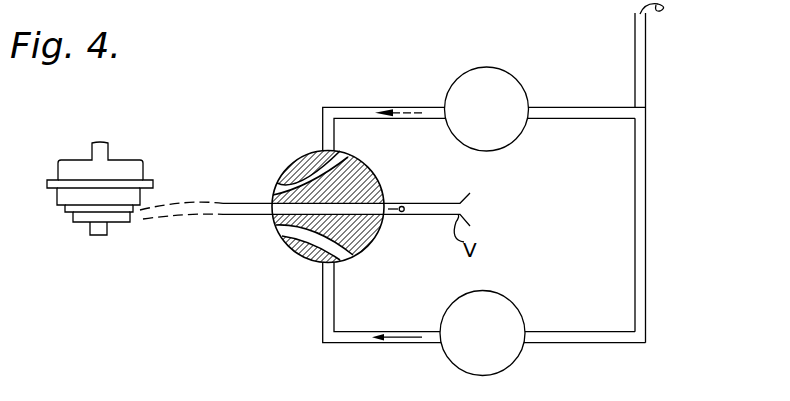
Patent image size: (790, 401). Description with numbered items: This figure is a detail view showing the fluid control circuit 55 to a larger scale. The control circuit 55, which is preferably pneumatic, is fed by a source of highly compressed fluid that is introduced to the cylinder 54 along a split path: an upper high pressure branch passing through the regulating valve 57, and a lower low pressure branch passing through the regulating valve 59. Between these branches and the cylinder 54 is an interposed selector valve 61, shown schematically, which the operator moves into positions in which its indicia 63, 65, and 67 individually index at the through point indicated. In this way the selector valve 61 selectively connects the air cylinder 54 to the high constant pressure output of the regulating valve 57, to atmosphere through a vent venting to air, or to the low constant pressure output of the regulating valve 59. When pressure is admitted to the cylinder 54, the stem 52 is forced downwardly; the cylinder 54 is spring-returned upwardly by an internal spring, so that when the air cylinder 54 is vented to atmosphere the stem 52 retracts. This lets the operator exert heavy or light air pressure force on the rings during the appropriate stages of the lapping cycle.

The stem 52 is at (90, 225).
The cylinder 54 is at (68, 165).
The control circuit 55 is at (303, 110).
The regulating valve 57 is at (503, 72).
The regulating valve 59 is at (512, 363).
The selector valve 61 is at (290, 253).
The indicium 63 is at (384, 202).
The indicium 65 is at (386, 224).
The indicium 67 is at (375, 228).